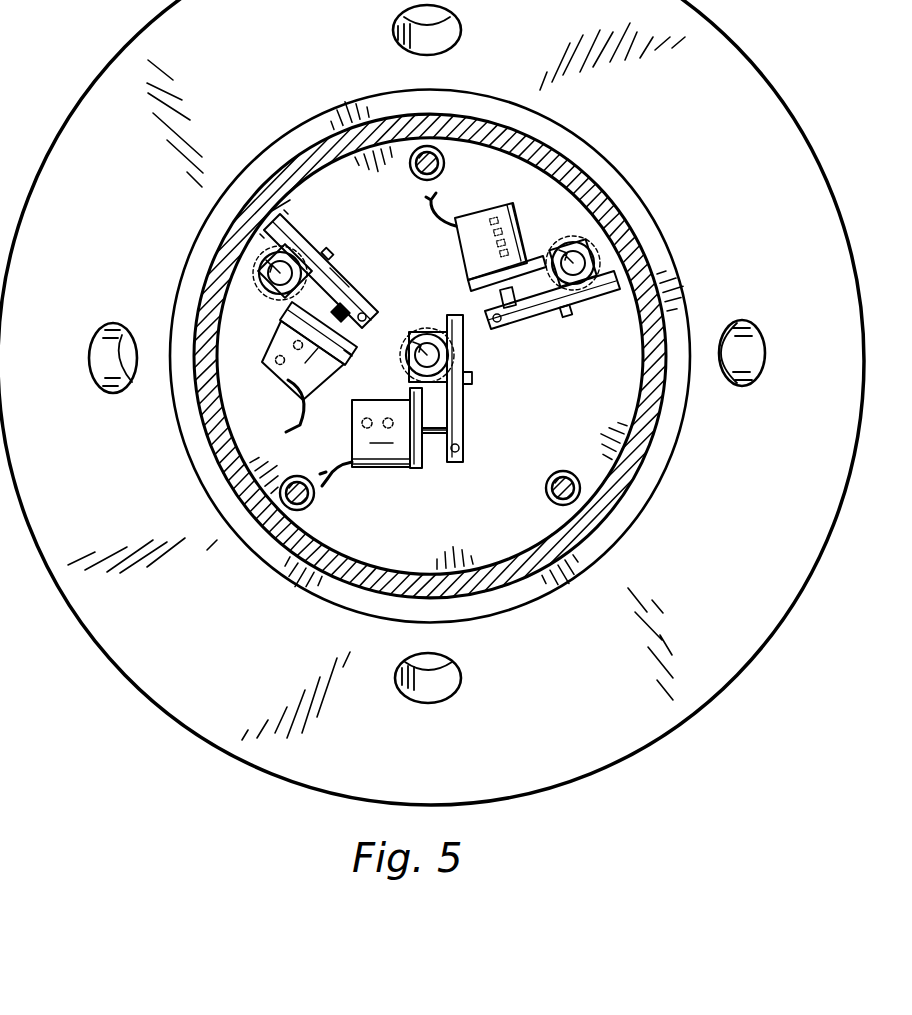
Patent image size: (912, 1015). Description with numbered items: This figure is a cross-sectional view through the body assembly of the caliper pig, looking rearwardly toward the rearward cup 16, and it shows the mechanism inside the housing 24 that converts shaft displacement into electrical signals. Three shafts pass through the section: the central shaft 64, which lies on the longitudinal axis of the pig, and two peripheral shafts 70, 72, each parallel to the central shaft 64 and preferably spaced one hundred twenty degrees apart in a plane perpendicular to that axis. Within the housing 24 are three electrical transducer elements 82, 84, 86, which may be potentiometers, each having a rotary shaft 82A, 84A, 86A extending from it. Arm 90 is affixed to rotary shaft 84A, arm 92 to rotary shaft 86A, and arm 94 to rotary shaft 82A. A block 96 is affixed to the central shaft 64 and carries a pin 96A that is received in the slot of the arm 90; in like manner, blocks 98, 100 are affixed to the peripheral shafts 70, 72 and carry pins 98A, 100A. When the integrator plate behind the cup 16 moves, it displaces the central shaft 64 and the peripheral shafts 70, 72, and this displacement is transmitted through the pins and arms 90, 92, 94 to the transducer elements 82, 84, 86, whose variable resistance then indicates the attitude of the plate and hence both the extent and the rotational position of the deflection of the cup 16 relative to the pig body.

The rearward cup 16 is at (752, 622).
The housing 24 is at (631, 475).
The central shaft 64 is at (427, 345).
The peripheral shaft 70 is at (270, 284).
The peripheral shaft 72 is at (573, 252).
The electrical transducer element 82 is at (474, 259).
The rotary shaft 82A is at (497, 325).
The electrical transducer element 84 is at (388, 445).
The rotary shaft 84A is at (443, 432).
The electrical transducer element 86 is at (287, 383).
The rotary shaft 86A is at (350, 343).
The arm 90 is at (458, 430).
The arm 92 is at (352, 296).
The arm 94 is at (594, 296).
The block 96 is at (367, 317).
The pin 96A is at (474, 378).
The block 98 is at (285, 243).
The pin 98A is at (330, 252).
The block 100 is at (590, 246).
The pin 100A is at (563, 318).